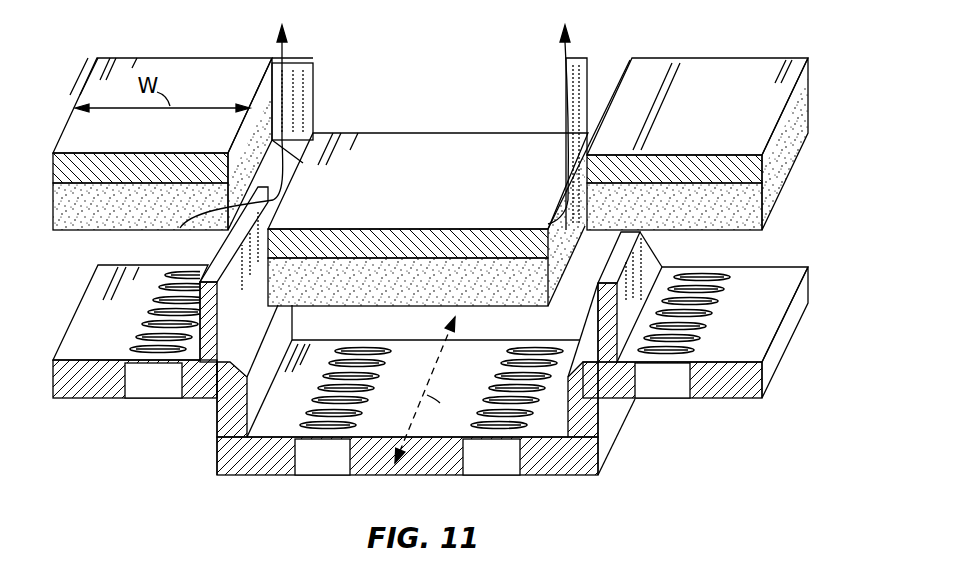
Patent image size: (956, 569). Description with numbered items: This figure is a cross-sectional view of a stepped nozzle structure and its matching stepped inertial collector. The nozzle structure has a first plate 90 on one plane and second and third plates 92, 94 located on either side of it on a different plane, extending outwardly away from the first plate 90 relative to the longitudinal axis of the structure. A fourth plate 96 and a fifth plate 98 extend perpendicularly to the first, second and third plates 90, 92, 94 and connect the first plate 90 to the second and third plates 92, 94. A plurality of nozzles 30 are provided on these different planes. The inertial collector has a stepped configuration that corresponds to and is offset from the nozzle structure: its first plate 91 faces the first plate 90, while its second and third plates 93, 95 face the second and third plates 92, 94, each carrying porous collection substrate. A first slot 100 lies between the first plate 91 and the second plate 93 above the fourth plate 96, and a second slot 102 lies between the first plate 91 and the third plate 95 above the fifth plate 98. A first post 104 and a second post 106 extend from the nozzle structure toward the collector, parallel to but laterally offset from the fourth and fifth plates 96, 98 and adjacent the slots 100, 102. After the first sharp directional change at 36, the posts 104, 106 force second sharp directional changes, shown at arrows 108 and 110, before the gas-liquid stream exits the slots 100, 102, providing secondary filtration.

The nozzles 30 is at (158, 390).
The sharp directional change 36 is at (177, 327).
The first plate 90 is at (550, 422).
The first plate 91 is at (420, 184).
The second plate 92 is at (96, 337).
The second plate 93 is at (189, 90).
The third plate 94 is at (734, 324).
The third plate 95 is at (690, 100).
The fourth plate 96 is at (227, 432).
The fifth plate 98 is at (588, 420).
The first slot 100 is at (290, 167).
The second slot 102 is at (572, 223).
The first post 104 is at (220, 256).
The second post 106 is at (643, 266).
The arrow 108 is at (270, 210).
The arrow 110 is at (573, 203).